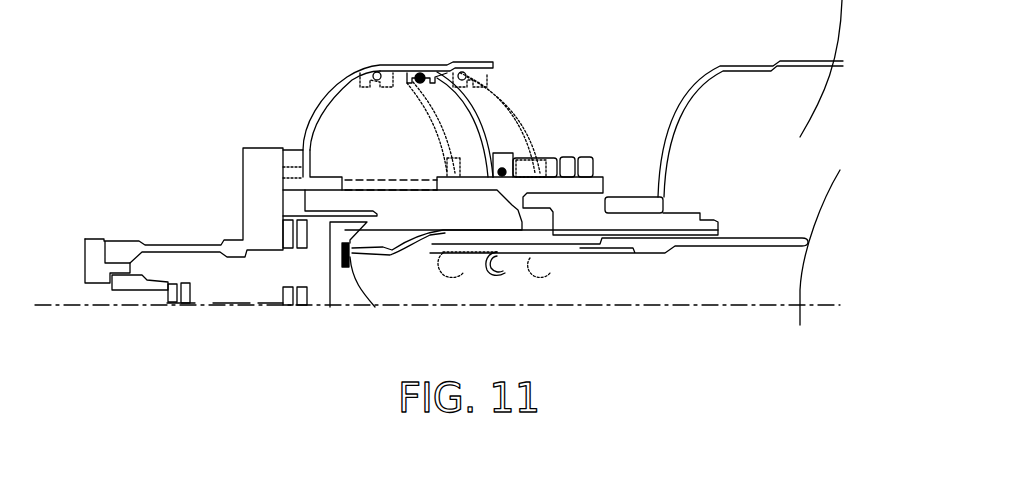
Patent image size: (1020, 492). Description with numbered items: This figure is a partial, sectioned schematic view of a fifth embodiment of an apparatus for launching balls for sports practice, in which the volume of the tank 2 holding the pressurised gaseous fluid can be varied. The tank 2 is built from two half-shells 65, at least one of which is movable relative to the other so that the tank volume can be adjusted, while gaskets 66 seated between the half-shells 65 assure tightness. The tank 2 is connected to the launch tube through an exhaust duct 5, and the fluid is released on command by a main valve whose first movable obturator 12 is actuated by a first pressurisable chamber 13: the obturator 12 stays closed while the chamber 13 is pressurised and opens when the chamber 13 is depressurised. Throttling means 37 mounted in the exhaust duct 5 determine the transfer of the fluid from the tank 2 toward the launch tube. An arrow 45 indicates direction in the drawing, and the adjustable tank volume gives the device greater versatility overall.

The tank 2 is at (342, 115).
The exhaust duct 5 is at (660, 282).
The first movable obturator 12 is at (350, 290).
The first pressurisable chamber 13 is at (300, 263).
The throttling means 37 is at (536, 286).
The direction arrow 45 is at (754, 210).
The half-shells 65 is at (305, 128).
The gaskets 66 is at (420, 76).